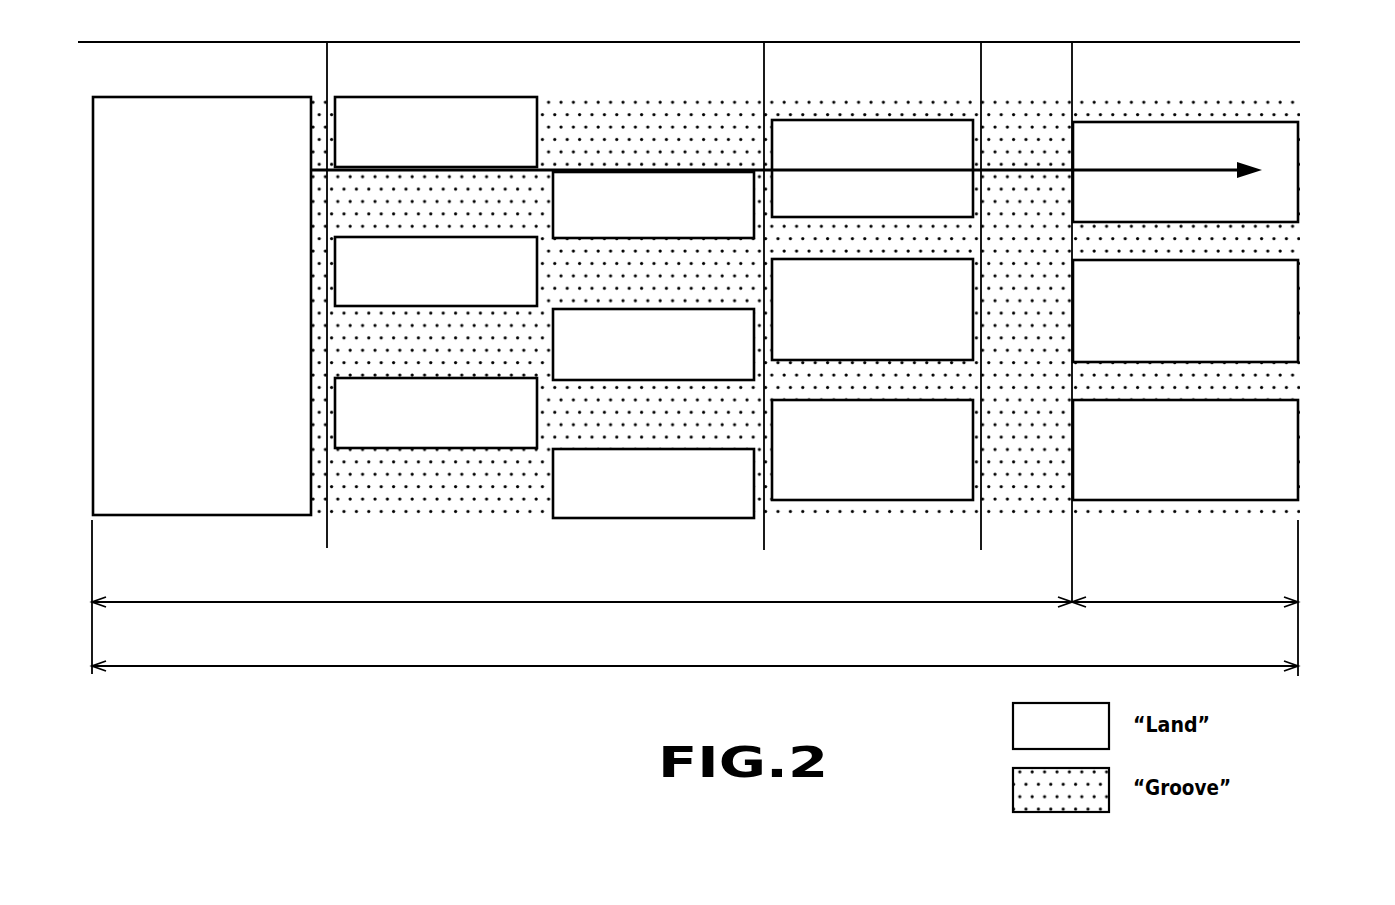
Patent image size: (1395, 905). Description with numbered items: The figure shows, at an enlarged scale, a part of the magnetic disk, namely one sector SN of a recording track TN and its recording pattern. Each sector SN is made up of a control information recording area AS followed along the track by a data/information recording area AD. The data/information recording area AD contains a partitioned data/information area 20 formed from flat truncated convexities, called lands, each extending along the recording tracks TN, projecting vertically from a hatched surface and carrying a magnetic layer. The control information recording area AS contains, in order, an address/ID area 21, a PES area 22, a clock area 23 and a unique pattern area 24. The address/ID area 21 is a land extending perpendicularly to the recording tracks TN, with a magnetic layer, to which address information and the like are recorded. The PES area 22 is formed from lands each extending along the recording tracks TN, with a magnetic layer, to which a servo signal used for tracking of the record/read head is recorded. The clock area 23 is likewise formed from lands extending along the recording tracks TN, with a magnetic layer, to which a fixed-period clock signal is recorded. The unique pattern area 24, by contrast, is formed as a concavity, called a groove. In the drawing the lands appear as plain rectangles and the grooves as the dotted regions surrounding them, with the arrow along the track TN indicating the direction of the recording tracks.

The partitioned data/information area 20 is at (1086, 47).
The address/ID area 21 is at (313, 47).
The PES (Position Error Signal) area 22 is at (341, 47).
The clock area 23 is at (778, 47).
The unique pattern area 24 is at (995, 47).
The recording track TN is at (1285, 155).
The control information recording area AS is at (582, 589).
The data/information recording area AD is at (1185, 589).
The sector SN is at (695, 653).